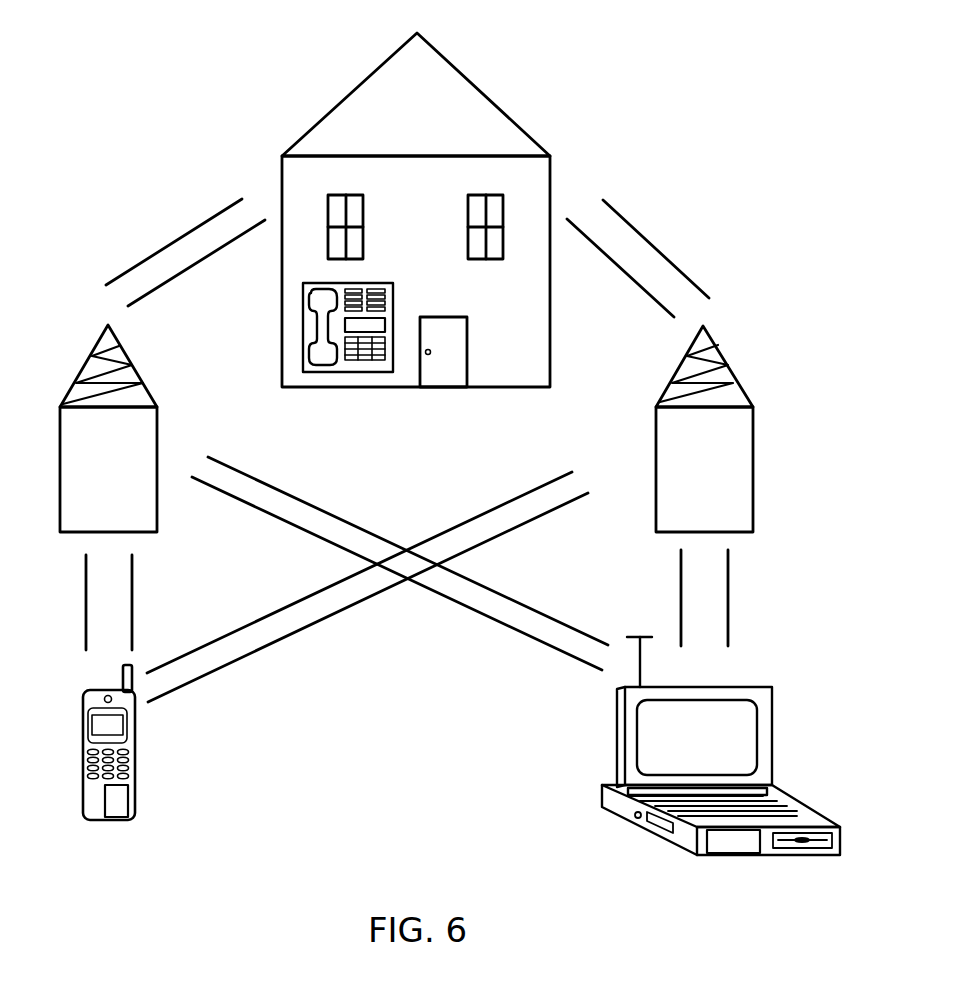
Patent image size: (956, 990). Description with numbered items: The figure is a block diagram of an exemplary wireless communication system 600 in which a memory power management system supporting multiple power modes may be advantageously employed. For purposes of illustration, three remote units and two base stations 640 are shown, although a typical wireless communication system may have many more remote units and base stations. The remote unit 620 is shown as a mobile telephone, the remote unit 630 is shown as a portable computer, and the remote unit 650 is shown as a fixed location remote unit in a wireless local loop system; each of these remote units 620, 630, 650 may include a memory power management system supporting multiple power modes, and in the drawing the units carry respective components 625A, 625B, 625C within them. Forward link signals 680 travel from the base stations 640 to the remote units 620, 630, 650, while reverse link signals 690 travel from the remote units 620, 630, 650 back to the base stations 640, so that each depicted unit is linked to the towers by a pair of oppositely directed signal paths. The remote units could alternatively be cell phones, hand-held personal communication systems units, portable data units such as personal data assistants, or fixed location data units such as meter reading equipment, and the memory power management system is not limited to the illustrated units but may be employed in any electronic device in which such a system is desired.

The wireless communication system 600 is at (117, 69).
The remote unit 620 is at (88, 694).
The transceiver in mobile telephone 625A is at (118, 805).
The transceiver in telephone 625B is at (375, 325).
The transceiver in laptop computer 625C is at (740, 840).
The remote unit 630 is at (750, 685).
The base station 640 is at (85, 365).
The remote unit 650 is at (303, 337).
The forward link signals 680 is at (180, 238).
The reverse link signals 690 is at (182, 275).